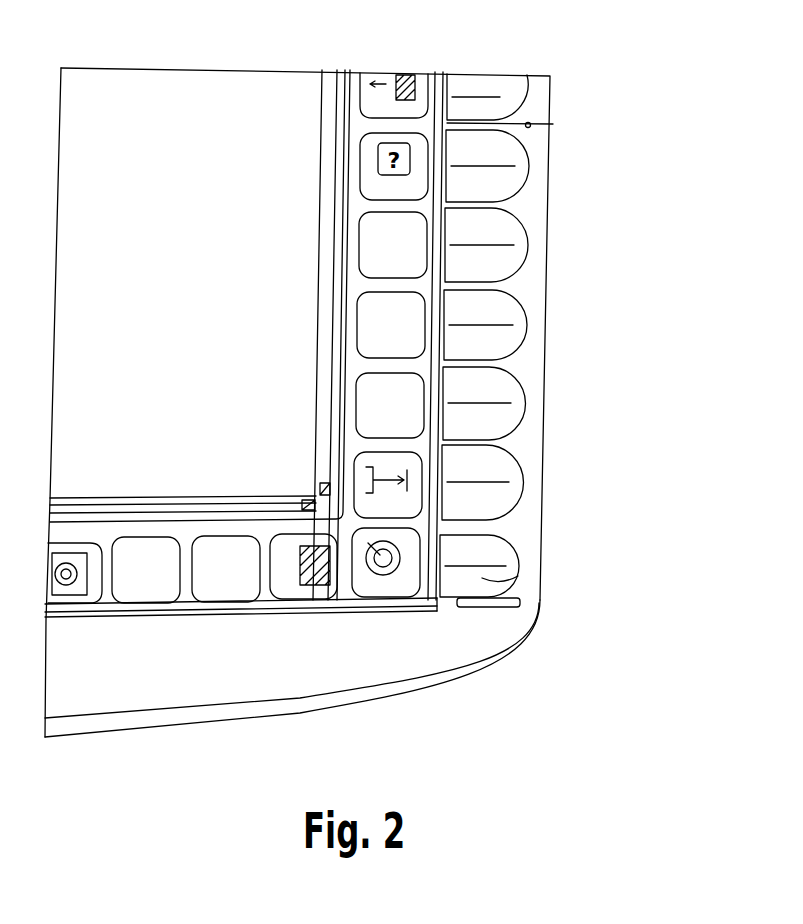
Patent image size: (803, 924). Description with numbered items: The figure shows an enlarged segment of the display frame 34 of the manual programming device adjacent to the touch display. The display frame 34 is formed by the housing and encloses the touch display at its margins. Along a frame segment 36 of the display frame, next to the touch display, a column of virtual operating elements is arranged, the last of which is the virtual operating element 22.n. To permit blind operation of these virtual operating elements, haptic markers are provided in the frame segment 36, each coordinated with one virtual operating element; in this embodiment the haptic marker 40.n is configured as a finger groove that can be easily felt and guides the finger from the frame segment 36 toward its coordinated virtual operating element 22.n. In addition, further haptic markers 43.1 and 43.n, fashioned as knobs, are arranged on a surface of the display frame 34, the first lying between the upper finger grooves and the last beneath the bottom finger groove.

The virtual operating element 22.n is at (412, 541).
The display frame 34 is at (488, 643).
The frame segment 36 is at (424, 367).
The haptic marker 40.n is at (485, 575).
The haptic marker 43.1 is at (553, 124).
The haptic marker 43.n is at (520, 603).